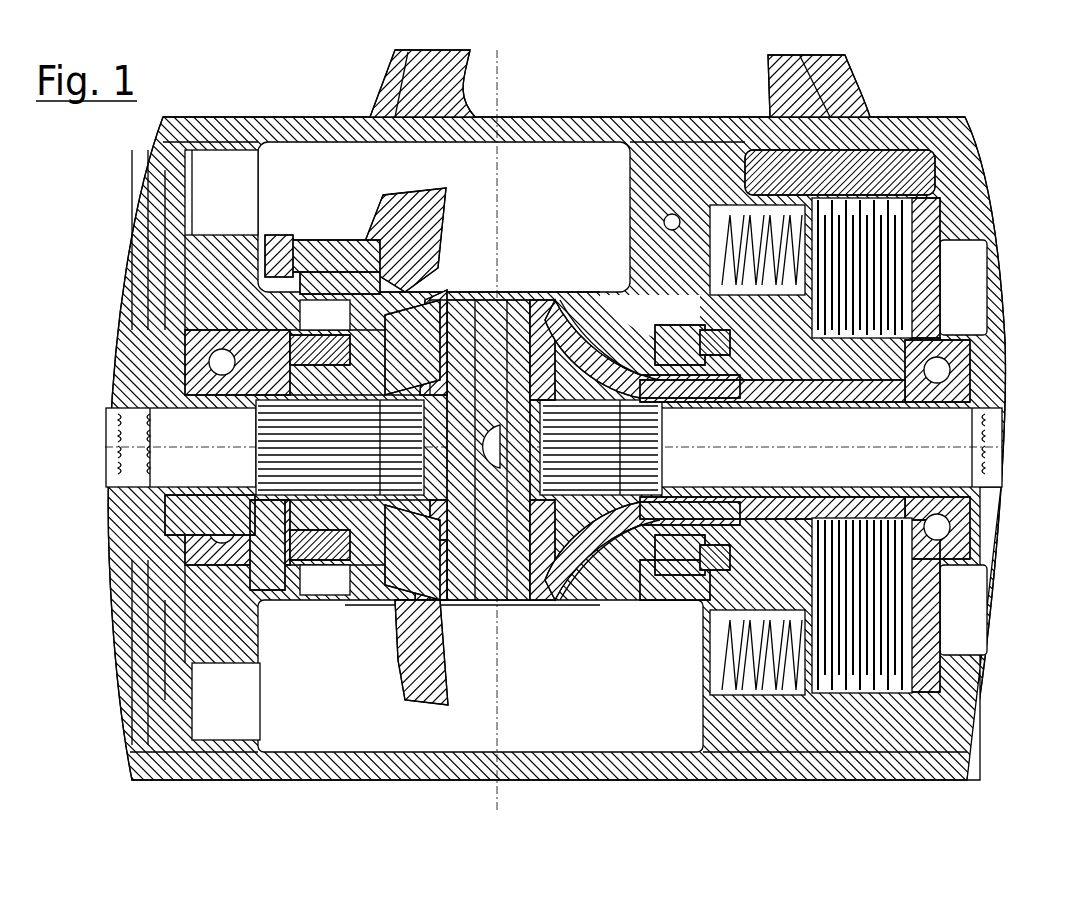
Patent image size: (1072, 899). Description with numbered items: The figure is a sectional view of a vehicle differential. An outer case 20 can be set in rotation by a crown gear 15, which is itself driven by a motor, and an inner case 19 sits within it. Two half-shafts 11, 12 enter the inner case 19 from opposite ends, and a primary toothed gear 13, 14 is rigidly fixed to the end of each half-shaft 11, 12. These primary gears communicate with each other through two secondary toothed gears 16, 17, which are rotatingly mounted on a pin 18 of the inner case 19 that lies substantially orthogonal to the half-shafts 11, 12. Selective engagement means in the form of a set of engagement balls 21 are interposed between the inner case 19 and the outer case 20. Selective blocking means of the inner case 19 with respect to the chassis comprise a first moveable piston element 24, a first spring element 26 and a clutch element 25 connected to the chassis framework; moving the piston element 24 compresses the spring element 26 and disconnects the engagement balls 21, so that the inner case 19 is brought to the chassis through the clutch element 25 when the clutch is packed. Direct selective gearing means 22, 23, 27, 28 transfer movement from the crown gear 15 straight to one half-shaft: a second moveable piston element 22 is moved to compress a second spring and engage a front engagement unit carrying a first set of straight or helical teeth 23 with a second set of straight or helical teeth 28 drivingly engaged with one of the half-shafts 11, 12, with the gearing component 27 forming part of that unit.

The half-shaft 11 is at (946, 430).
The half-shaft 12 is at (175, 432).
The primary toothed gear 13 is at (567, 380).
The primary toothed gear 14 is at (447, 330).
The crown gear 15 is at (410, 215).
The secondary toothed gear 16 is at (530, 330).
The secondary toothed gear 17 is at (528, 600).
The pin 18 is at (490, 600).
The inner case 19 is at (717, 395).
The outer case 20 is at (673, 345).
The engagement balls 21 is at (713, 343).
The second moveable piston element 22 is at (160, 506).
The first set of straight or helical teeth 23 is at (265, 520).
The first moveable piston element 24 is at (690, 660).
The clutch element 25 is at (910, 660).
The first spring element 26 is at (765, 680).
The direct selective gearing means component 27 is at (265, 290).
The second set of straight or helical teeth 28 is at (330, 590).